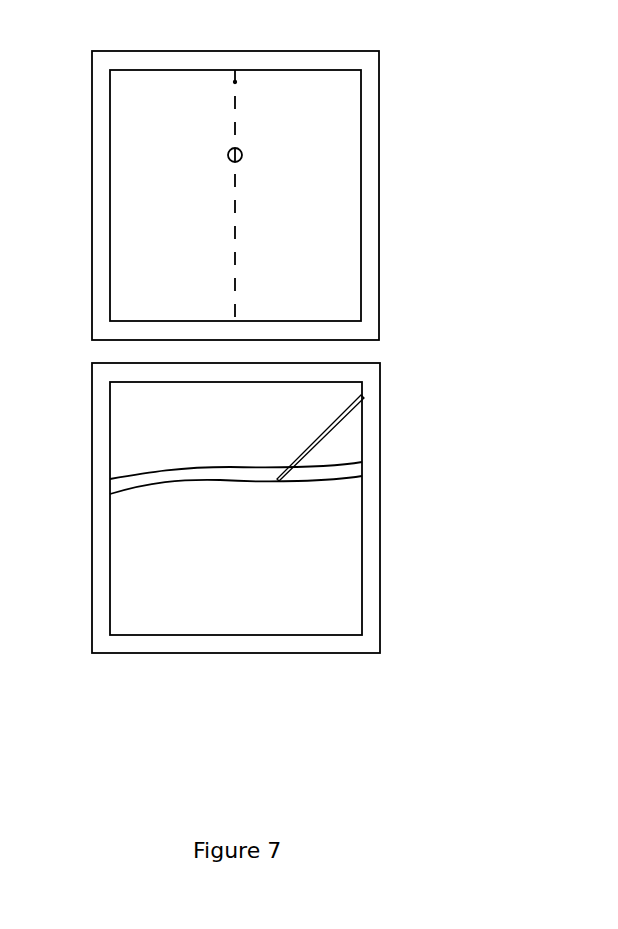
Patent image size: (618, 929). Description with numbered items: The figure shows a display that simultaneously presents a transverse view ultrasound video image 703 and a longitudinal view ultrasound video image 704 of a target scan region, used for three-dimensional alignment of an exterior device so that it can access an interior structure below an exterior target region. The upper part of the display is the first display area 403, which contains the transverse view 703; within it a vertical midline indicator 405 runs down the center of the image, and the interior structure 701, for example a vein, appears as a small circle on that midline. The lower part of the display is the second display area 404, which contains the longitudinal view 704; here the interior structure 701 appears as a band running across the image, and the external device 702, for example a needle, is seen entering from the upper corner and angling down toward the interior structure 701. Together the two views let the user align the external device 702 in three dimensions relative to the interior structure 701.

The first display area 403 is at (379, 99).
The transverse view ultrasound video image 703 is at (361, 190).
The vertical midline indicator 405 is at (235, 247).
The interior structure 701 is at (228, 155).
The external device 702 is at (235, 82).
The second display area 404 is at (380, 510).
The longitudinal view ultrasound video image 704 is at (362, 602).